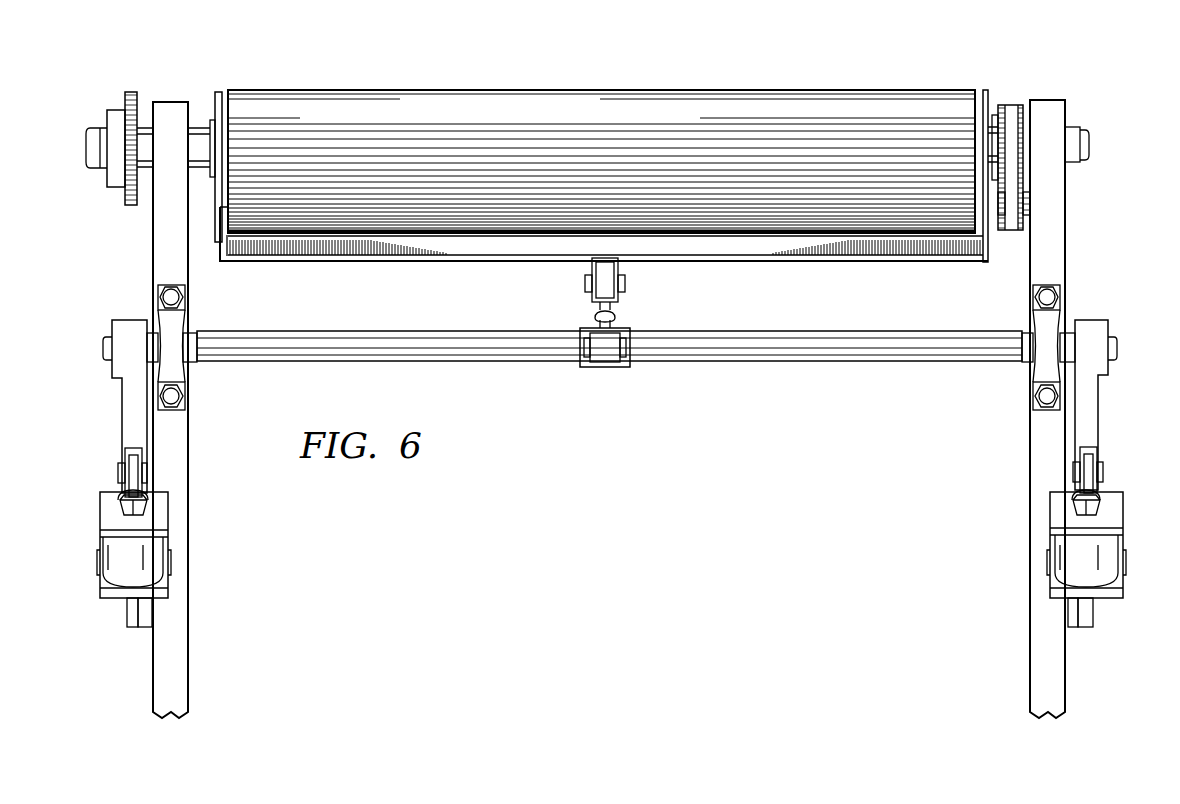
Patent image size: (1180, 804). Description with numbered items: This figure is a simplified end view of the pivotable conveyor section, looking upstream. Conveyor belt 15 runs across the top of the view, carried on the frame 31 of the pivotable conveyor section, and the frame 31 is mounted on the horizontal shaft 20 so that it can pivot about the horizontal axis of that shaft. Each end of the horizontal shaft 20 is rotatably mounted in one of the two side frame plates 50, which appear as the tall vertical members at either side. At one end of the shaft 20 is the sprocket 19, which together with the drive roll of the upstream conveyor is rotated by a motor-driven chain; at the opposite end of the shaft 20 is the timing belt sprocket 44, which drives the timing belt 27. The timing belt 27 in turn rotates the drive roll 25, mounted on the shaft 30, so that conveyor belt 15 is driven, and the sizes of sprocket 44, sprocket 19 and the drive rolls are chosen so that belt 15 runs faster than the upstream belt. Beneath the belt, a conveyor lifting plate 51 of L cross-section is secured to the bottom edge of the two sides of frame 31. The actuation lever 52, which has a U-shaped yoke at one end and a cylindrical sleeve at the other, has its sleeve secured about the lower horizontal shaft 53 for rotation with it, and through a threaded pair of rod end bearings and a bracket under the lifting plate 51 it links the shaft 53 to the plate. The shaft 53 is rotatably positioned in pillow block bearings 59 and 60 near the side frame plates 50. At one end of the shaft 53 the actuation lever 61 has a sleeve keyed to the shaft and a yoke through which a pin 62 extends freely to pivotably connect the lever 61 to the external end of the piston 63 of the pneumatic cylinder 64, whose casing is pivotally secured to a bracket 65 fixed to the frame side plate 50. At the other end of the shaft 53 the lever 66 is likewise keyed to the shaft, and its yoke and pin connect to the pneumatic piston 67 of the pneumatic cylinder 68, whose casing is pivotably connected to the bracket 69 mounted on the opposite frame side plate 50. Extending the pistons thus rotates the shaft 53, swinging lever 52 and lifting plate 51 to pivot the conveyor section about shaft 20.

The conveyor belt 15 is at (550, 90).
The sprocket 19 is at (130, 91).
The horizontal shaft 20 is at (88, 142).
The drive roll 25 is at (1023, 224).
The timing belt 27 is at (1012, 105).
The shaft 30 is at (1031, 205).
The frame 31 is at (215, 92).
The timing belt sprocket 44 is at (1022, 108).
The side frame plate 50 is at (188, 478).
The conveyor lifting plate 51 is at (345, 262).
The actuation lever 52 is at (586, 367).
The horizontal shaft 53 is at (436, 362).
The pillow block bearing 59 is at (196, 372).
The pillow block bearing 60 is at (1024, 372).
The actuation lever 61 is at (122, 405).
The pin 62 is at (118, 470).
The piston 63 is at (110, 503).
The pneumatic cylinder 64 is at (103, 546).
The bracket 65 is at (127, 620).
The lever 66 is at (1100, 405).
The pneumatic piston 67 is at (1100, 497).
The pneumatic cylinder 68 is at (1120, 546).
The bracket 69 is at (1093, 620).